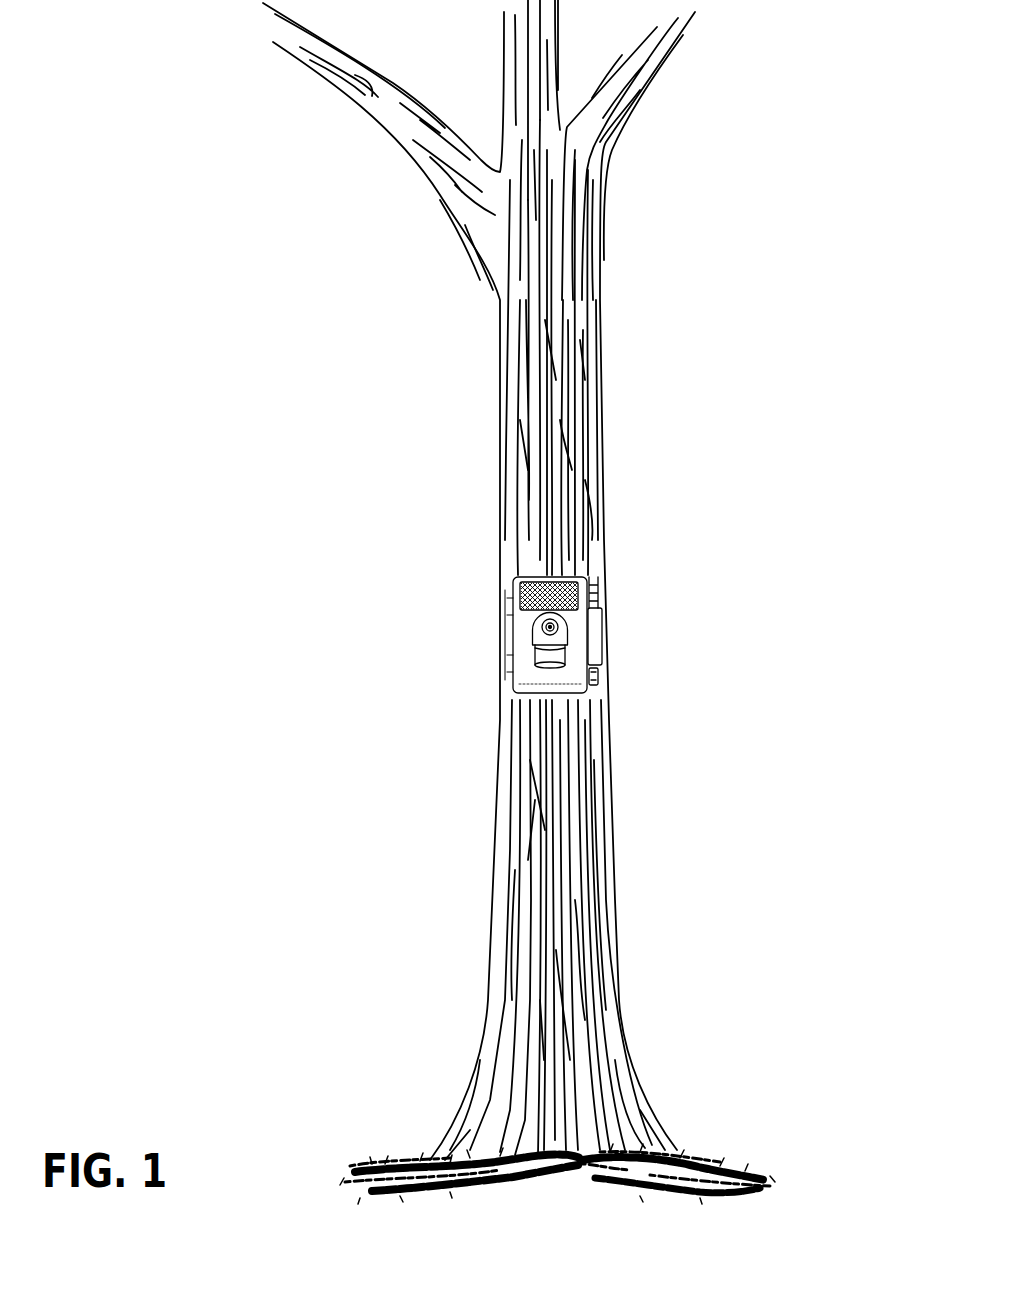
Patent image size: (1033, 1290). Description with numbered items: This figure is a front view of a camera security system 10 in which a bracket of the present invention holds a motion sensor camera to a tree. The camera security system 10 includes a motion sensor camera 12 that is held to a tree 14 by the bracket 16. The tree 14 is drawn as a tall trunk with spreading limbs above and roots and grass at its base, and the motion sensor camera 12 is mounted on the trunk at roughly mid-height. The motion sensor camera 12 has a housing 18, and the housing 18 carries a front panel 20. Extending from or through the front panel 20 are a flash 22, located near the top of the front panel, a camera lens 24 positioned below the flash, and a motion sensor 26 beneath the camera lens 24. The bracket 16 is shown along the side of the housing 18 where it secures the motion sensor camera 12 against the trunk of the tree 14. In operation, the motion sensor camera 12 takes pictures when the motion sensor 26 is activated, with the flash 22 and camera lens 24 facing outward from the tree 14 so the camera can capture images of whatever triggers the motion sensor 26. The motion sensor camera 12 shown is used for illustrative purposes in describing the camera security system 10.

The camera security system 10 is at (531, 635).
The motion sensor camera 12 is at (597, 693).
The tree 14 is at (612, 479).
The bracket 16 is at (607, 612).
The housing 18 is at (600, 677).
The front panel 20 is at (523, 682).
The flash 22 is at (528, 582).
The camera lens 24 is at (543, 627).
The motion sensor 26 is at (548, 655).